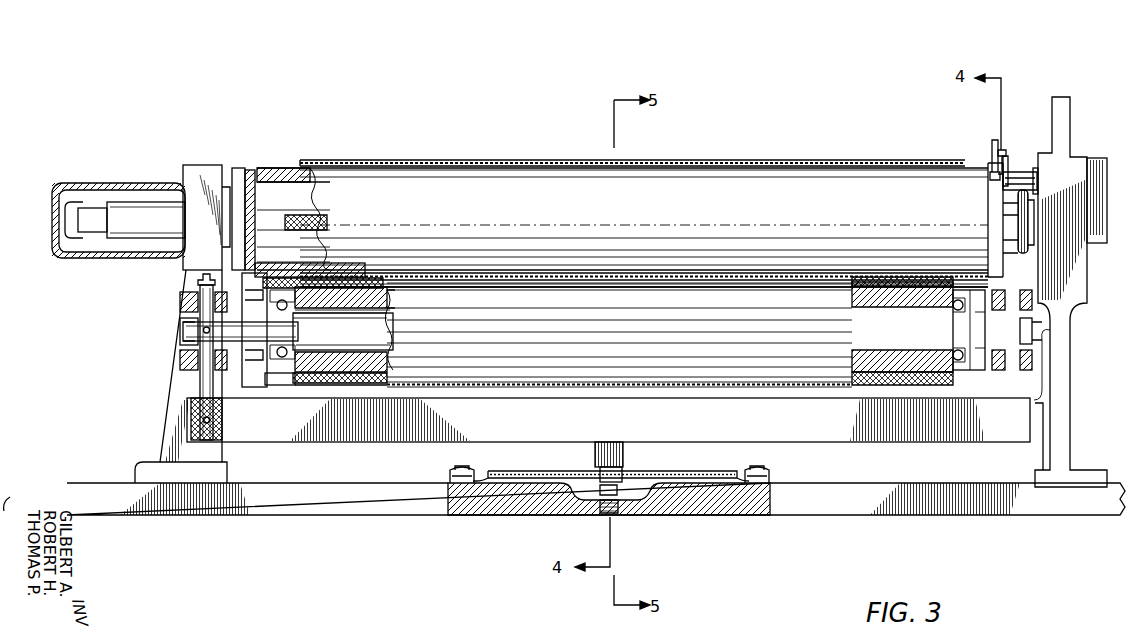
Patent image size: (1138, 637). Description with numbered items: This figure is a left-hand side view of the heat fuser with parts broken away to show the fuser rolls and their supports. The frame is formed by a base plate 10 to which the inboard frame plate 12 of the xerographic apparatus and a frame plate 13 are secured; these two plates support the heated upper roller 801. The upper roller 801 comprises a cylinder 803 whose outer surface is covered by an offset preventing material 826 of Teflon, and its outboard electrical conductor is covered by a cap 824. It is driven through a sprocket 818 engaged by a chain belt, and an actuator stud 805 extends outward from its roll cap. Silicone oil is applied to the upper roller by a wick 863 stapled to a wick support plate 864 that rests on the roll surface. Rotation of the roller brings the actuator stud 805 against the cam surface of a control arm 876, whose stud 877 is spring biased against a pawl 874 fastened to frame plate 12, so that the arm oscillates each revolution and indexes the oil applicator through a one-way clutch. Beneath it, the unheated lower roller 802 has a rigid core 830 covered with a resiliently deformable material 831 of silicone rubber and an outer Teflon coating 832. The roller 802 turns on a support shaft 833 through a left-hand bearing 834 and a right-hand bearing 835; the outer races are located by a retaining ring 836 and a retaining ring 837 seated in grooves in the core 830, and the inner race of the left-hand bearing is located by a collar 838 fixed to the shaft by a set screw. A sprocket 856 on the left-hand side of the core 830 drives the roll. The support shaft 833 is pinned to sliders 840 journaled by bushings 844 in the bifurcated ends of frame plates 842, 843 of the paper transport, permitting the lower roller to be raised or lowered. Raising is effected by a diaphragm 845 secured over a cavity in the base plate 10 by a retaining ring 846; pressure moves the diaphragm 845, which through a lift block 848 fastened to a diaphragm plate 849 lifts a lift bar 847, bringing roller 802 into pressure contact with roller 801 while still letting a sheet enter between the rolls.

The base plate 10 is at (873, 516).
The inboard frame plate 12 is at (1072, 150).
The frame plate 13 is at (165, 445).
The upper roller 801 is at (800, 315).
The lower roller 802 is at (702, 380).
The cylinder 803 is at (252, 165).
The actuator stud 805 is at (998, 181).
The sprocket 818 is at (1005, 216).
The cap 824 is at (170, 186).
The offset preventing material 826 is at (264, 168).
The rigid core 830 is at (392, 300).
The resiliently deformable material 831 is at (387, 281).
The Teflon coating 832 is at (384, 385).
The support shaft 833 is at (392, 314).
The left-hand bearing 834 is at (340, 319).
The right-hand bearing 835 is at (985, 270).
The retaining ring 836 is at (276, 387).
The retaining ring 837 is at (985, 372).
The collar 838 is at (310, 338).
The sliders 840 is at (200, 380).
The frame plate 842 is at (180, 302).
The frame plate 843 is at (1032, 298).
The bushings 844 is at (225, 318).
The diaphragm 845 is at (698, 516).
The retaining ring 846 is at (785, 460).
The lift bar 847 is at (485, 441).
The lift block 848 is at (628, 455).
The diaphragm plate 849 is at (693, 463).
The sprocket 856 is at (250, 395).
The wick 863 is at (500, 148).
The wick support plate 864 is at (349, 159).
The pawl 874 is at (1022, 140).
The control arm 876 is at (990, 160).
The stud 877 is at (1004, 150).